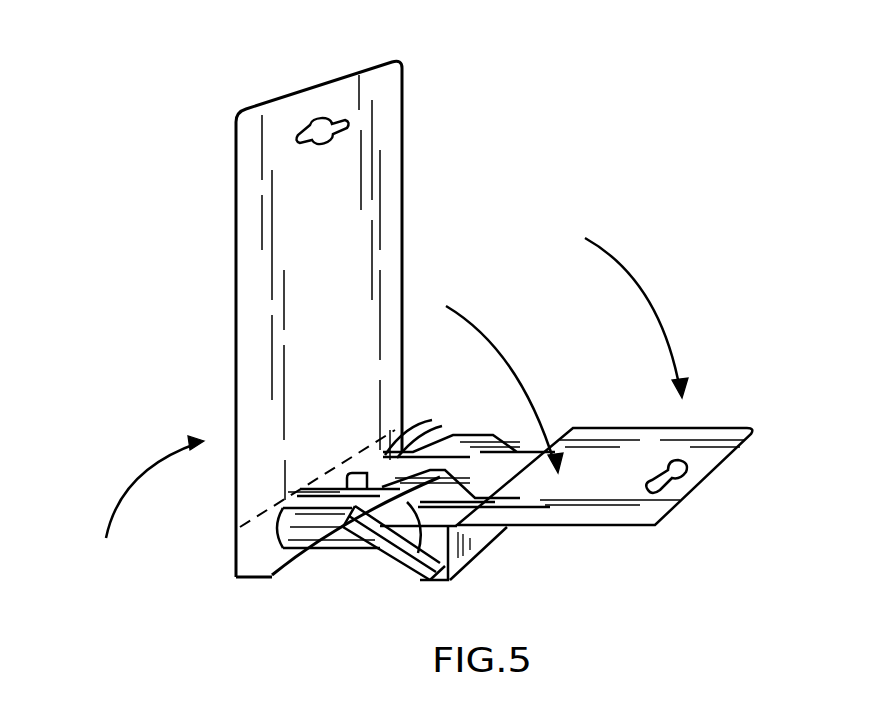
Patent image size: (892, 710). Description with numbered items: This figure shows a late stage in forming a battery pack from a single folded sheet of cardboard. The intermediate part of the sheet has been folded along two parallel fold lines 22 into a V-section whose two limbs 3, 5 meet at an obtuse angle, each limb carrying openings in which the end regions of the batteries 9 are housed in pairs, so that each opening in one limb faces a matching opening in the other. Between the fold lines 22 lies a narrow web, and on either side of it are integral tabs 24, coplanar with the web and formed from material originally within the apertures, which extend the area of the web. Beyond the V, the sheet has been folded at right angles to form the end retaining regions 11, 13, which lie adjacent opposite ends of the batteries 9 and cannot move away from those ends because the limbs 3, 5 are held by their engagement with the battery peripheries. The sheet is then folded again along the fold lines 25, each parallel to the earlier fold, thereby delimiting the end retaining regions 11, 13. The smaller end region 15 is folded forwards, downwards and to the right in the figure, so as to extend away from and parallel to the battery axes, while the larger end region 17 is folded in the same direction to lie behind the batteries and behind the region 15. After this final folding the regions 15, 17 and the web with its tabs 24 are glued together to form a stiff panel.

The limb 3 is at (403, 571).
The limb 5 is at (296, 558).
The batteries 9 is at (318, 504).
The end retaining region 11 is at (483, 543).
The end retaining region 13 is at (250, 547).
The smaller end region 15 is at (605, 513).
The larger end region 17 is at (387, 194).
The fold lines 22 is at (372, 460).
The tabs 24 is at (478, 445).
The fold lines 25 is at (262, 515).